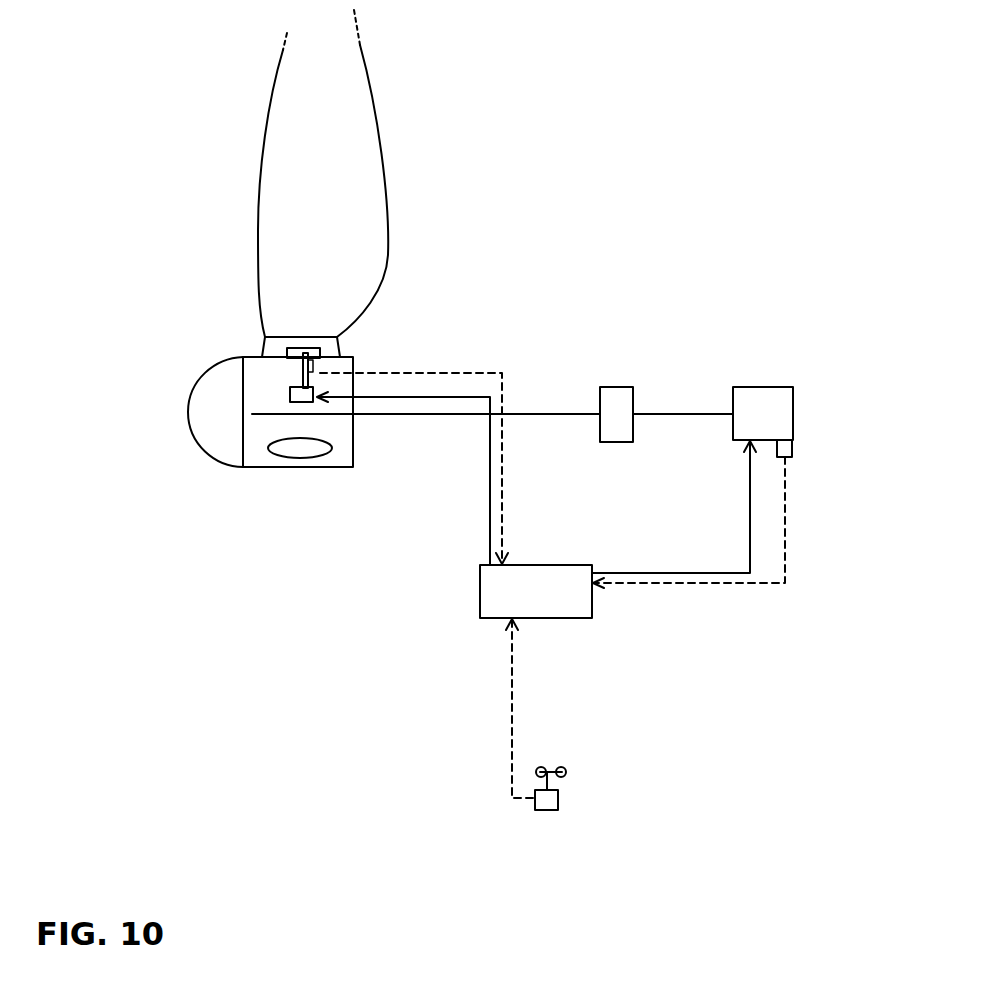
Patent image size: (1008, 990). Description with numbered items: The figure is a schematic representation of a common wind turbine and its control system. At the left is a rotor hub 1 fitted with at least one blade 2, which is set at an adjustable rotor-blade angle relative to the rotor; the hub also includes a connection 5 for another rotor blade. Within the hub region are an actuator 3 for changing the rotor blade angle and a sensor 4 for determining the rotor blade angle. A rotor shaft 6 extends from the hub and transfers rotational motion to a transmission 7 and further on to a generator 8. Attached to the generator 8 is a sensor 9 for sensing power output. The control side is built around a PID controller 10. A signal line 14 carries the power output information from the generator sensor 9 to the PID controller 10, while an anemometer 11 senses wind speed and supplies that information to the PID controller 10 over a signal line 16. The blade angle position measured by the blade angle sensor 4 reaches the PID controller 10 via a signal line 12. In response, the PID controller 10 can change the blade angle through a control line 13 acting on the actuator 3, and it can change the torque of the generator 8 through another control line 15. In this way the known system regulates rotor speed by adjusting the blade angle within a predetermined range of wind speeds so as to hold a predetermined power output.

The rotor hub 1 is at (258, 470).
The blade 2 is at (388, 185).
The actuator 3 is at (313, 402).
The sensor 4 is at (320, 366).
The connection 5 is at (303, 468).
The rotor shaft 6 is at (440, 414).
The transmission 7 is at (620, 387).
The generator 8 is at (793, 408).
The sensor 9 is at (792, 450).
The PID controller 10 is at (592, 608).
The anemometer 11 is at (547, 810).
The signal line 12 is at (505, 390).
The control line 13 is at (468, 396).
The signal line 14 is at (763, 583).
The control line 15 is at (752, 518).
The signal line 16 is at (512, 692).